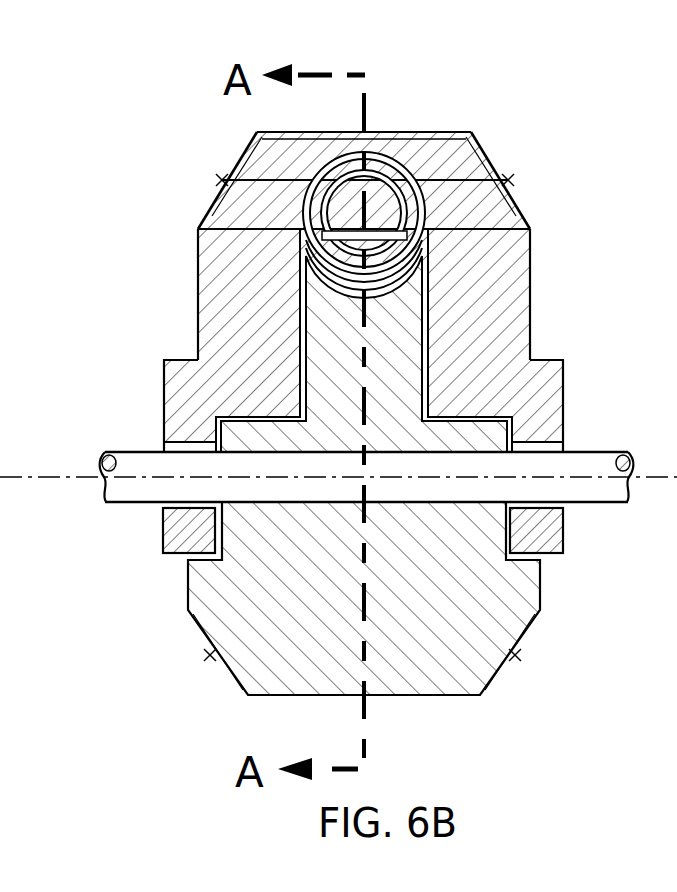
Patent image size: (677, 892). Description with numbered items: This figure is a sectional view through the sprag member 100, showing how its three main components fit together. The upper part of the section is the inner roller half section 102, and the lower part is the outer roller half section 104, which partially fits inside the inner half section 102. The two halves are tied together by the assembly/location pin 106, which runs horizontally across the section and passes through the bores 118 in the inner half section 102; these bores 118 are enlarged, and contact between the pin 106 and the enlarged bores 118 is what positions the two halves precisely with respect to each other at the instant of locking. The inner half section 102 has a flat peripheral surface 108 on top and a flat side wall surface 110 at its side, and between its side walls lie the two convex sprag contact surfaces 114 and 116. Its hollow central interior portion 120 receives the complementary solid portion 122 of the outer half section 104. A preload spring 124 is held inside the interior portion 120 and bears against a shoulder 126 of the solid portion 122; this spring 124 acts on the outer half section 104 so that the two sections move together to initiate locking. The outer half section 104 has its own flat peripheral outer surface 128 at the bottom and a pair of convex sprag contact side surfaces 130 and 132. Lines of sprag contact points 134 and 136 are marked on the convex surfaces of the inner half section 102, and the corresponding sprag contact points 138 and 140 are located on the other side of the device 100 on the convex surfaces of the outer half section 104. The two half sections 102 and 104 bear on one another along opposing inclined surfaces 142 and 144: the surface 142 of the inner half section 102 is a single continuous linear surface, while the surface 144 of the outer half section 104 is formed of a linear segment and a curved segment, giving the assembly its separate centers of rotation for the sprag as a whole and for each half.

The sprag member 100 is at (338, 386).
The inner roller half section 102 is at (358, 263).
The outer roller half section 104 is at (361, 513).
The assembly/location pin 106 is at (338, 499).
The flat peripheral surface 108 is at (368, 107).
The flat side wall surface 110 is at (149, 278).
The convex sprag contact surface 114 is at (183, 178).
The convex sprag contact surface 116 is at (549, 179).
The bores 118 is at (368, 530).
The hollow central interior portion 120 is at (418, 354).
The solid portion 122 is at (527, 328).
The preload spring 124 is at (390, 146).
The shoulder 126 is at (278, 696).
The flat peripheral outer surface 128 is at (454, 732).
The convex sprag contact side surface 130 is at (159, 652).
The convex sprag contact side surface 132 is at (566, 652).
The line of sprag contact points 134 is at (234, 170).
The line of sprag contact points 136 is at (498, 170).
The sprag contact point 138 is at (159, 668).
The sprag contact point 140 is at (568, 668).
The inclined surface 142 is at (560, 387).
The inclined surface 144 is at (205, 340).